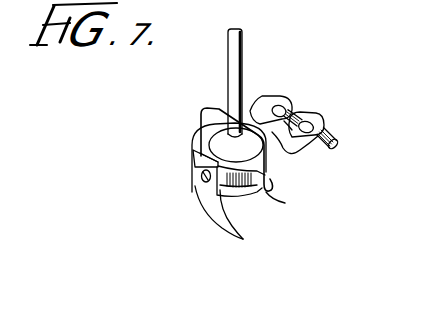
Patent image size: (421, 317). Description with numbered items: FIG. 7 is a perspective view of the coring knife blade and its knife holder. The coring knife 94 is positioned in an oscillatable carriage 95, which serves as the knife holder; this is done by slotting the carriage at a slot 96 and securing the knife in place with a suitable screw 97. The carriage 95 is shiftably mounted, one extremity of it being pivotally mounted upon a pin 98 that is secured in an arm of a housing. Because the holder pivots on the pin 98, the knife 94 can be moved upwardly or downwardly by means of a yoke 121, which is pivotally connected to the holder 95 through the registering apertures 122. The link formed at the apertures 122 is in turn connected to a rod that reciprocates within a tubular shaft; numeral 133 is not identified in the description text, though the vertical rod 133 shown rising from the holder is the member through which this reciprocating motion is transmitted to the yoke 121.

The coring knife 94 is at (241, 235).
The oscillatable carriage 95 is at (277, 158).
The slot 96 is at (195, 150).
The screw 97 is at (198, 178).
The pin 98 is at (338, 147).
The yoke 121 is at (268, 181).
The registering apertures 122 is at (258, 189).
The rod 133 is at (243, 62).